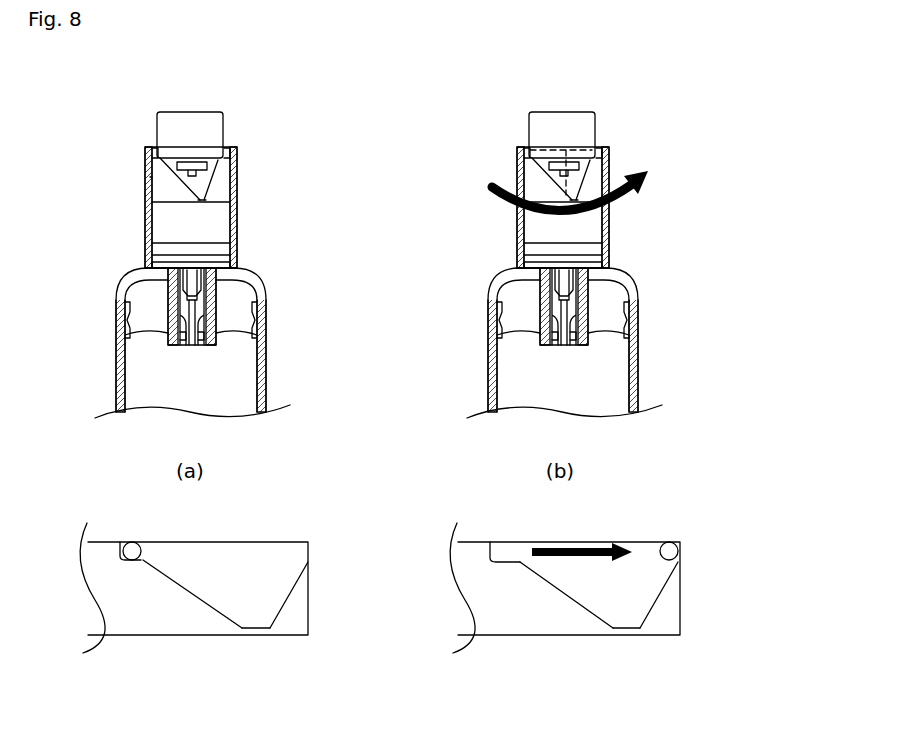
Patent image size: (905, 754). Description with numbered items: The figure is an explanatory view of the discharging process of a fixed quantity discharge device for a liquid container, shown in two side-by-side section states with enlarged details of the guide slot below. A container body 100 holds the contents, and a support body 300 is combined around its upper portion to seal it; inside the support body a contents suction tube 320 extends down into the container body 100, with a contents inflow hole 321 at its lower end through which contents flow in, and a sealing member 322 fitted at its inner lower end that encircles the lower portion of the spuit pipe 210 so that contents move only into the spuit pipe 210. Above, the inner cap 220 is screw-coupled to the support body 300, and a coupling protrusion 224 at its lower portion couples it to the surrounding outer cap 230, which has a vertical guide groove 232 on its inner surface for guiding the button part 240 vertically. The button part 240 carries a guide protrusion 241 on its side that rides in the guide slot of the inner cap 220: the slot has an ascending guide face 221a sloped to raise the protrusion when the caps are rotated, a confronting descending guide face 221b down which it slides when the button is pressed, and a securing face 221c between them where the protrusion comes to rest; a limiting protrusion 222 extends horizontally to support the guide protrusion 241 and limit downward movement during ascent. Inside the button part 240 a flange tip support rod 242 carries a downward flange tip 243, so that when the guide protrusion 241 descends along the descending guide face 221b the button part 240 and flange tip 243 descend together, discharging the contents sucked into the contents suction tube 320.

The container body 100 is at (262, 376).
The spuit pipe 210 is at (256, 318).
The inner cap 220 is at (160, 212).
The ascending guide face 221a is at (180, 176).
The descending guide face 221b is at (218, 165).
The securing face 221c is at (203, 200).
The limiting protrusion 222 is at (128, 563).
The coupling protrusion 224 is at (165, 246).
The outer cap 230 is at (232, 150).
The vertical guide groove 232 is at (148, 177).
The button part 240 is at (185, 120).
The guide protrusion 241 is at (155, 152).
The flange tip support rod 242 is at (218, 265).
The flange tip 243 is at (205, 290).
The support body 300 is at (127, 287).
The contents suction tube 320 is at (170, 317).
The contents inflow hole 321 is at (185, 346).
The sealing member 322 is at (175, 337).